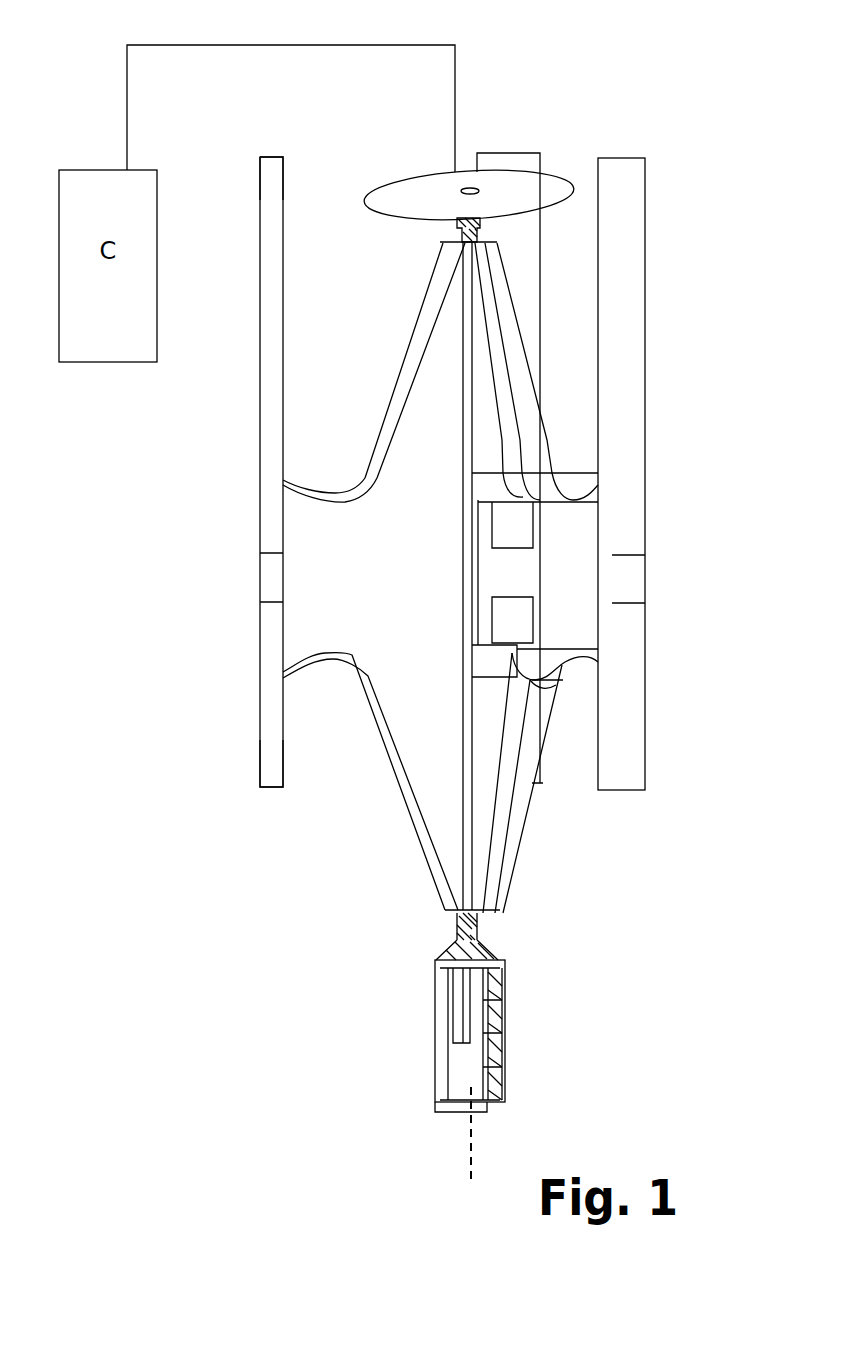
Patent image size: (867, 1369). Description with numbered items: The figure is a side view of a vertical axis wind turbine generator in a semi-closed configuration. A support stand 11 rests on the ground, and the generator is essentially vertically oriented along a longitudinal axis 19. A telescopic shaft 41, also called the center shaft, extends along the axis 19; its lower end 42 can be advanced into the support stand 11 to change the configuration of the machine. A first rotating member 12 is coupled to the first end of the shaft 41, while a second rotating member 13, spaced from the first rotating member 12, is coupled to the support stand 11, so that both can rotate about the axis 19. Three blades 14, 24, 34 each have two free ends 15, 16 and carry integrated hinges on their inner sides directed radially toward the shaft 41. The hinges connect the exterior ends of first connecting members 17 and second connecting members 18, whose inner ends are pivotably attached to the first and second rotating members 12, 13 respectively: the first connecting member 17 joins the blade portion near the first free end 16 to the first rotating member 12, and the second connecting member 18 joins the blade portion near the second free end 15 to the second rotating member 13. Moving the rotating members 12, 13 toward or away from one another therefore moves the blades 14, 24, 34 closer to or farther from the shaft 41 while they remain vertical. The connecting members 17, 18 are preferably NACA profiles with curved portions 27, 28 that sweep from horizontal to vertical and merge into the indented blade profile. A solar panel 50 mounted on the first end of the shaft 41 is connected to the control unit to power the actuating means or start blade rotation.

The support stand 11 is at (492, 1012).
The first rotating member 12 is at (445, 219).
The second rotating member 13 is at (473, 927).
The blade 14 is at (268, 578).
The second free end 15 is at (260, 786).
The first free end 16 is at (262, 175).
The first connecting member 17 is at (415, 355).
The second connecting member 18 is at (438, 857).
The longitudinal axis 19 is at (468, 1133).
The blade 24 is at (533, 290).
The curved portion 27 is at (487, 490).
The curved portion 28 is at (483, 665).
The blade 34 is at (633, 298).
The telescopic shaft 41 is at (467, 582).
The lower end 42 is at (473, 1040).
The solar panel 50 is at (443, 193).